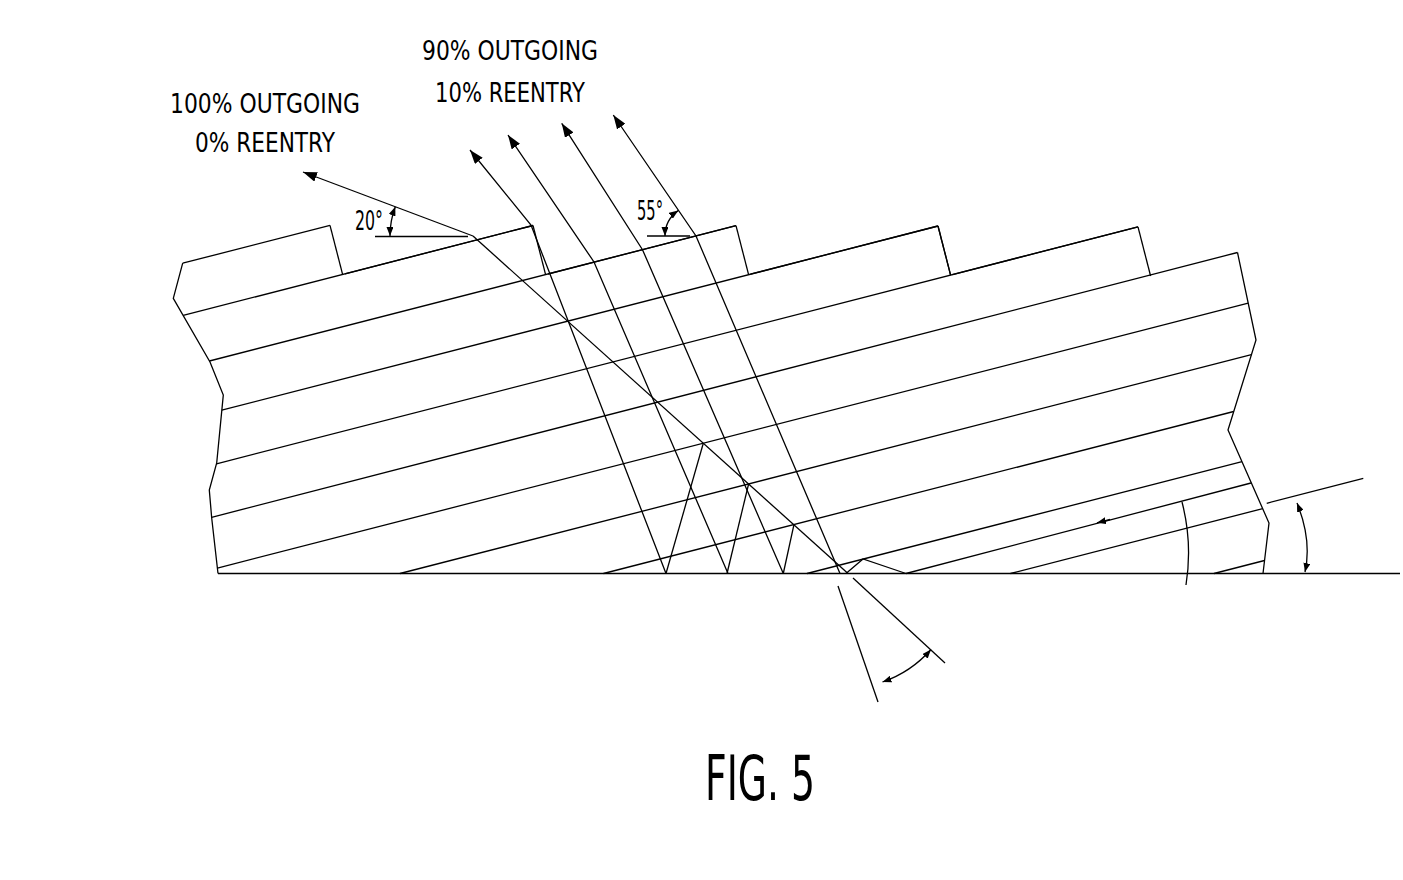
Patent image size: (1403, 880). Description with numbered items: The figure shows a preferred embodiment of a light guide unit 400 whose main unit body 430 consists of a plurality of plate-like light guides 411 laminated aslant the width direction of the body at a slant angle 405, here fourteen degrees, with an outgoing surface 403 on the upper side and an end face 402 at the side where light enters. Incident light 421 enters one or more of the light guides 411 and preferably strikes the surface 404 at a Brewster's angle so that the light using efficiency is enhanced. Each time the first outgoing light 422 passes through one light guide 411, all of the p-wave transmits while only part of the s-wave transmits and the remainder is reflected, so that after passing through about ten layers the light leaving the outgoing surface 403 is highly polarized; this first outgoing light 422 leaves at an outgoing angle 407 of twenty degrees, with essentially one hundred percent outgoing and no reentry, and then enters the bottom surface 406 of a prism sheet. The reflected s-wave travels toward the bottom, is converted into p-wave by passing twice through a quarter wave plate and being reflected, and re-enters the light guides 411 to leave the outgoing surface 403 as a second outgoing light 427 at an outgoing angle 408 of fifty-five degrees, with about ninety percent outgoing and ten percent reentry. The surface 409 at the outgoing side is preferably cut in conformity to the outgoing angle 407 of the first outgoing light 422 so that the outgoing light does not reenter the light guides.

The light guide unit 400 is at (1081, 162).
The end face 402 is at (1245, 467).
The outgoing surface 403 is at (868, 240).
The surface 404 is at (990, 518).
The slant angle 405 is at (1320, 545).
The bottom surface of prism sheet 406 is at (865, 667).
The outgoing angle of first outgoing light 407 is at (413, 213).
The outgoing angle of second outgoing light 408 is at (680, 222).
The outgoing surface shape 409 is at (750, 243).
The light guide 411 is at (943, 240).
The incident light 421 is at (1168, 558).
The first outgoing light 422 is at (298, 190).
The second outgoing light 427 is at (636, 147).
The main unit body 430 is at (1127, 227).